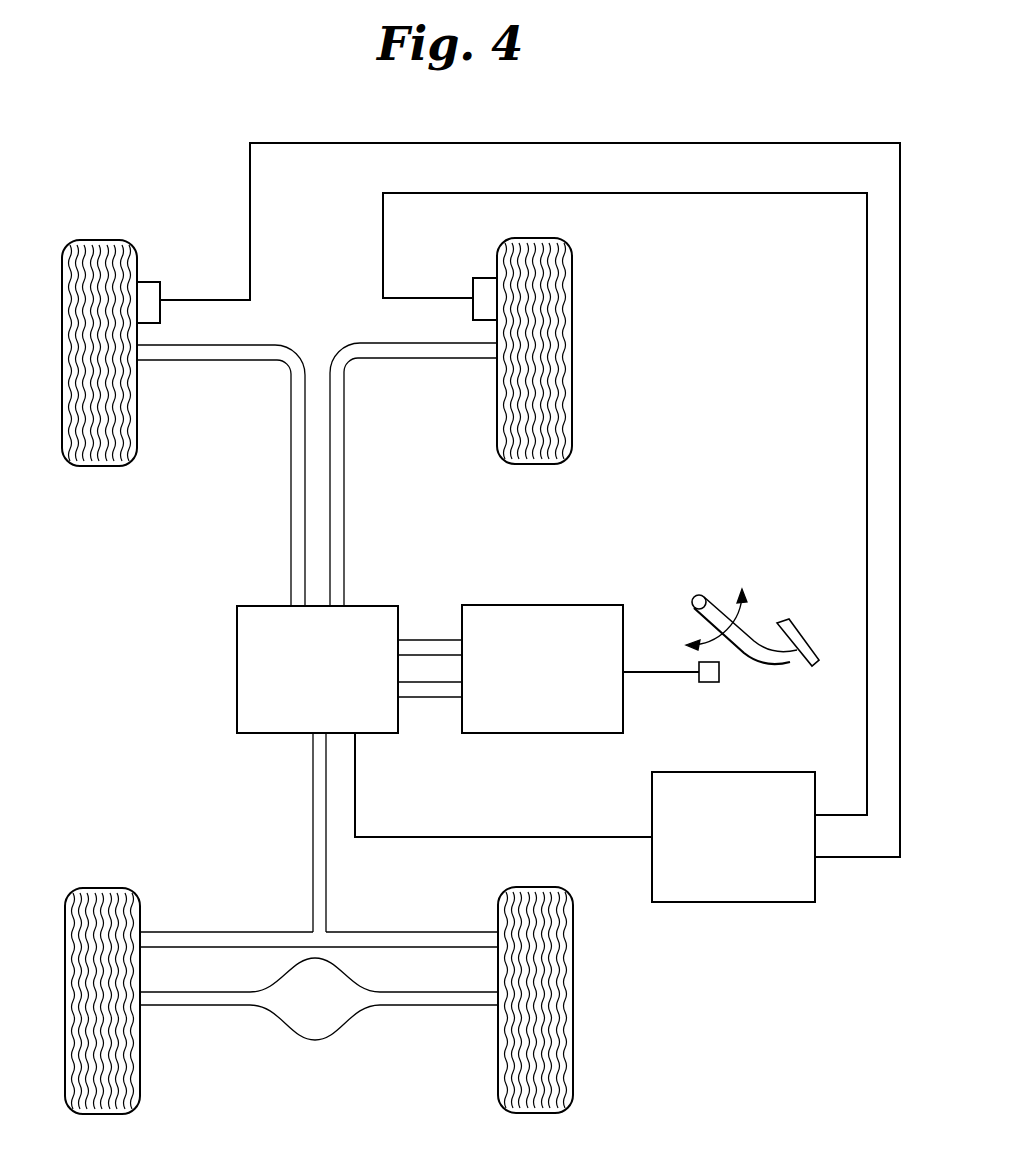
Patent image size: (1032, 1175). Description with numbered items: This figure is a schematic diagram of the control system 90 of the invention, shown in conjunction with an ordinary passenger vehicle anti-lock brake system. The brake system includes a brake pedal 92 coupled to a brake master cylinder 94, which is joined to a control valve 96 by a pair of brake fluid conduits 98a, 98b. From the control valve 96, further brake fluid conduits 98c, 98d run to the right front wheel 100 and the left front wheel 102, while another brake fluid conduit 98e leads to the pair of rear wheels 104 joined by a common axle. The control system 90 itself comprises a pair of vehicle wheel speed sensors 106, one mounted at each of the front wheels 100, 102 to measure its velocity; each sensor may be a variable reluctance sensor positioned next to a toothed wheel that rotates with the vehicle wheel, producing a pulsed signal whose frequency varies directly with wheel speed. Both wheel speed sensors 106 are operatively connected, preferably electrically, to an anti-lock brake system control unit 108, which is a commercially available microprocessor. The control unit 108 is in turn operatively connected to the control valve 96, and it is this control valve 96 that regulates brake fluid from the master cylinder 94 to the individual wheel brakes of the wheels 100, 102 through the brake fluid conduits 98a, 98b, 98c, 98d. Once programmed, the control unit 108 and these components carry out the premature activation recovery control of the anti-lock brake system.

The control system 90 is at (178, 658).
The brake pedal 92 is at (757, 638).
The brake master cylinder 94 is at (583, 605).
The control valve 96 is at (237, 680).
The brake fluid conduit 98a is at (429, 640).
The brake fluid conduit 98b is at (427, 697).
The brake fluid conduit 98c is at (345, 502).
The brake fluid conduit 98d is at (290, 500).
The brake fluid conduit 98e is at (313, 808).
The right front wheel 100 is at (573, 320).
The left front wheel 102 is at (137, 414).
The pair of rear wheels 104 is at (140, 1057).
The vehicle wheel speed sensors 106 is at (165, 282).
The anti-lock brake system control unit 108 is at (773, 902).